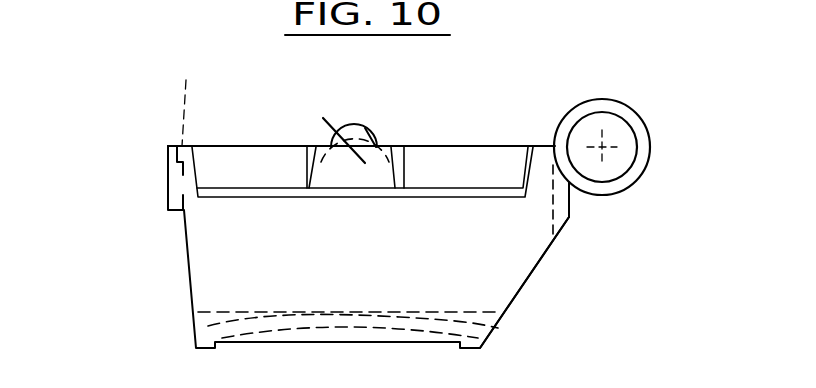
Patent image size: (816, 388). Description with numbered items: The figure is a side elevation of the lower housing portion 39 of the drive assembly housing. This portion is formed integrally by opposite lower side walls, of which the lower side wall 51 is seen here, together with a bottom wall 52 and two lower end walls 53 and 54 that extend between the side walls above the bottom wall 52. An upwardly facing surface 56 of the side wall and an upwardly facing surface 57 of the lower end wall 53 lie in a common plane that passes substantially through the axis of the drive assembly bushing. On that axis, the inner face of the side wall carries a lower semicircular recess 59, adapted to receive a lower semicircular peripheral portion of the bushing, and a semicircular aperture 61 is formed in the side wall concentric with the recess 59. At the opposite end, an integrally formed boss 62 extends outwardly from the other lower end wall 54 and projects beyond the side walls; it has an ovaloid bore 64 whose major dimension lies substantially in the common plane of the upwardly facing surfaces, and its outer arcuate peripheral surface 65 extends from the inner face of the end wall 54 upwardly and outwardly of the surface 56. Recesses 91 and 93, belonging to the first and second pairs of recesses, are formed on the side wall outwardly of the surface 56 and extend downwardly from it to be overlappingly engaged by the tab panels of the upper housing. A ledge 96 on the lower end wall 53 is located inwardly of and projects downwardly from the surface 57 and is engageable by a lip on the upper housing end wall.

The lower housing portion 39 is at (361, 87).
The lower side wall 51 is at (388, 260).
The bottom wall 52 is at (340, 327).
The lower end wall 53 is at (165, 182).
The lower end wall 54 is at (569, 217).
The upwardly facing surface 56 is at (423, 146).
The upwardly facing surface 57 is at (167, 146).
The lower semicircular recess 59 is at (363, 117).
The semicircular aperture 61 is at (337, 128).
The boss 62 is at (648, 133).
The ovaloid bore 64 is at (568, 167).
The outer arcuate peripheral surface 65 is at (572, 108).
The recess 91 is at (276, 175).
The recess 93 is at (480, 181).
The ledge 96 is at (187, 99).